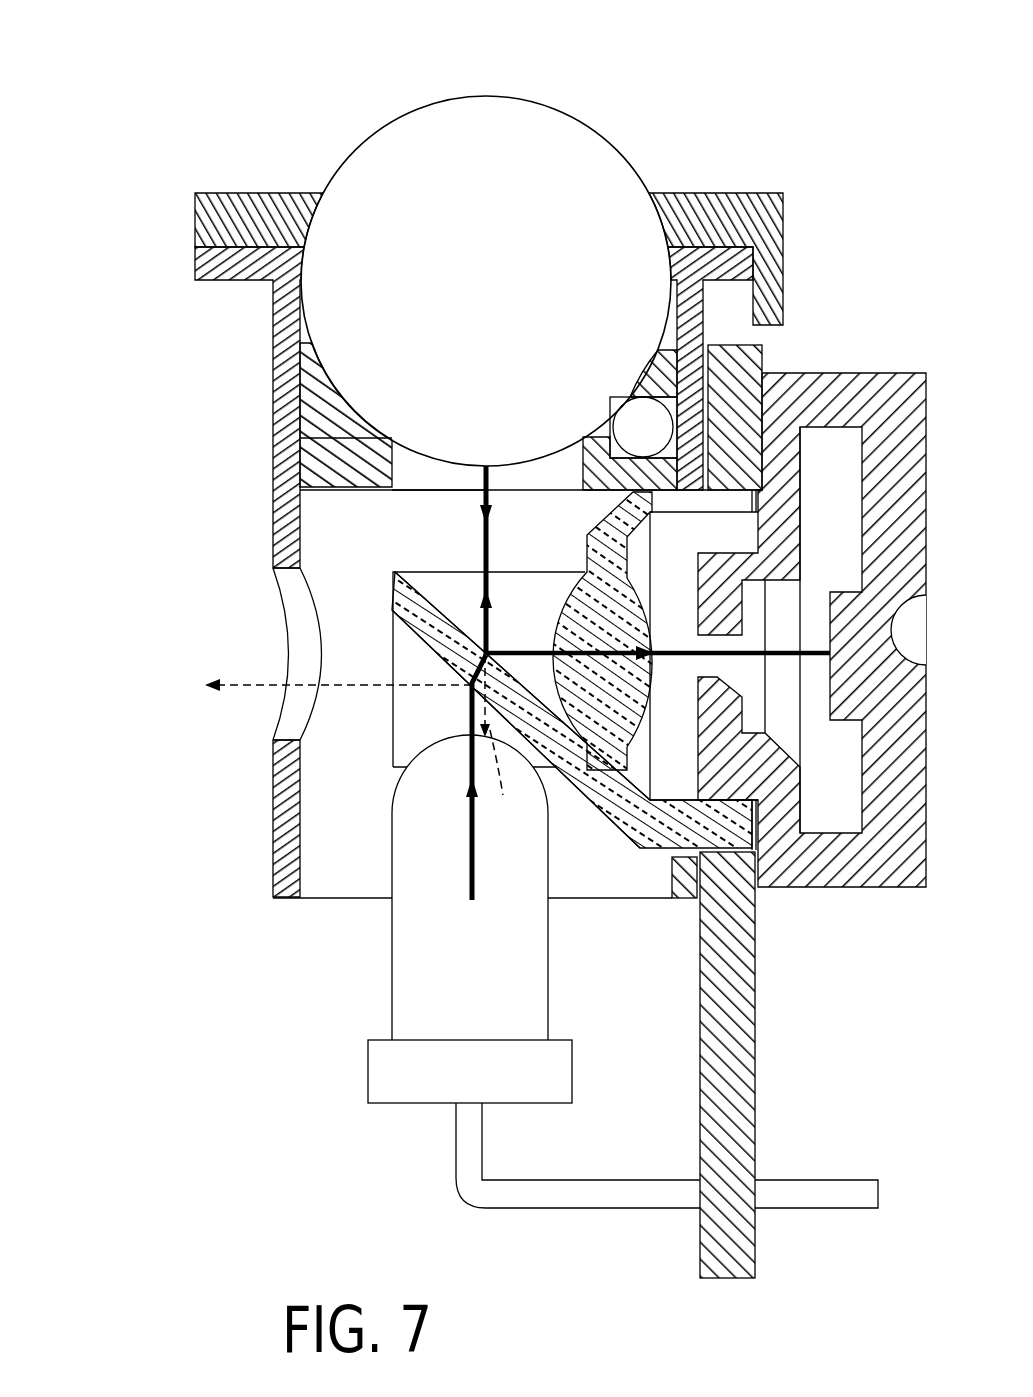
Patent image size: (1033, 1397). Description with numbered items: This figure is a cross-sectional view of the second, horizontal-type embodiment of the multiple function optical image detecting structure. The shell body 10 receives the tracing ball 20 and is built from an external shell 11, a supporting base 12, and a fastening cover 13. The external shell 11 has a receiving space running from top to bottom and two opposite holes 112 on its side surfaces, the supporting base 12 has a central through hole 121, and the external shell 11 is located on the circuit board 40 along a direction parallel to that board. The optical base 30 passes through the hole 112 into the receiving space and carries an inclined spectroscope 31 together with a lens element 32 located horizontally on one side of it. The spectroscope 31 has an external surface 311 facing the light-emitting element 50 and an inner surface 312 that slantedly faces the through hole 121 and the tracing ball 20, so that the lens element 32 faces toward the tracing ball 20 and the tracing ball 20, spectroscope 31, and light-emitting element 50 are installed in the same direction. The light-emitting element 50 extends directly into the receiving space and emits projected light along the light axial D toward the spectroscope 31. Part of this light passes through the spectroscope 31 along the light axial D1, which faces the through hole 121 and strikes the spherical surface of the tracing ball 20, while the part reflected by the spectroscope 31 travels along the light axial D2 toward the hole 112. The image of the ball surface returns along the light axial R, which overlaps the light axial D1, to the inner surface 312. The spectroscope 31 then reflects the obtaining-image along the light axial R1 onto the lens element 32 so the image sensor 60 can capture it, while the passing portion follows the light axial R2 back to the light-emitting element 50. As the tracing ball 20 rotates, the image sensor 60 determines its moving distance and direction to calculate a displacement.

The shell body 10 is at (104, 216).
The external shell 11 is at (272, 362).
The supporting base 12 is at (272, 438).
The fastening cover 13 is at (213, 214).
The hole 112 is at (292, 615).
The through hole 121 is at (413, 465).
The tracing ball 20 is at (478, 88).
The optical base 30 is at (461, 693).
The spectroscope 31 is at (461, 750).
The external surface 311 is at (478, 657).
The inner surface 312 is at (430, 597).
The lens element 32 is at (583, 612).
The circuit board 40 is at (690, 1252).
The light-emitting element 50 is at (425, 1112).
The image sensor 60 is at (895, 366).
The light axial of the obtaining-image R is at (483, 478).
The light axial of the reflected obtaining-image R1 is at (528, 648).
The light axial of the passing obtaining-image R2 is at (495, 777).
The light axial of the projected light D is at (468, 722).
The light axial of the light passing through the spectroscope D1 is at (482, 540).
The light axial of the reflected projected light D2 is at (270, 687).